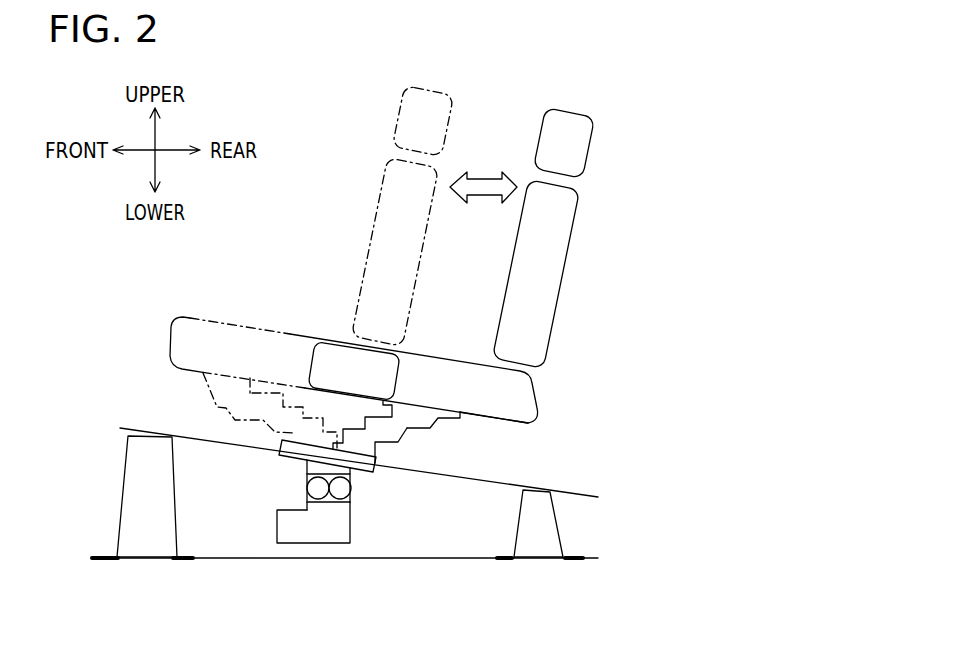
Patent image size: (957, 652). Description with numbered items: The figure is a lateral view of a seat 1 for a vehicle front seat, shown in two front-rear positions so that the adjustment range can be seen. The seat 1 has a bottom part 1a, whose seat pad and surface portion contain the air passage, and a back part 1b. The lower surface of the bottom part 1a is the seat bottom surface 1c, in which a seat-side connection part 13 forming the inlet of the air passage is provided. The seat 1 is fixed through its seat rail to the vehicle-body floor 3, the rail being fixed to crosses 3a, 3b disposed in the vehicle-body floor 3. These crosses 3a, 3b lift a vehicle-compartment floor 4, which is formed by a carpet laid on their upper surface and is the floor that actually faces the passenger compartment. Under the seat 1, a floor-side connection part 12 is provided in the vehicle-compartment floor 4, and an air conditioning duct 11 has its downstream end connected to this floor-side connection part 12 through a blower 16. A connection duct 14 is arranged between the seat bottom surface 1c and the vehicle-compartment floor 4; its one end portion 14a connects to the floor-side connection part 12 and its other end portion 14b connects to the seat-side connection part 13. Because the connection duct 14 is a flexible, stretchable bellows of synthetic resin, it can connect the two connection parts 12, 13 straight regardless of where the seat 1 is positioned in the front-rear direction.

The seat 1 is at (430, 290).
The bottom part 1a is at (540, 385).
The back part 1b is at (565, 265).
The seat bottom surface 1c is at (497, 423).
The vehicle-body floor 3 is at (203, 558).
The cross 3a is at (122, 490).
The cross 3b is at (557, 522).
The vehicle-compartment floor 4 is at (185, 435).
The air conditioning duct 11 is at (278, 500).
The floor-side connection part 12 is at (307, 462).
The seat-side connection part 13 is at (455, 413).
The connection duct 14 is at (466, 522).
The one end portion 14a is at (375, 463).
The other end portion 14b is at (453, 415).
The blower 16 is at (350, 498).